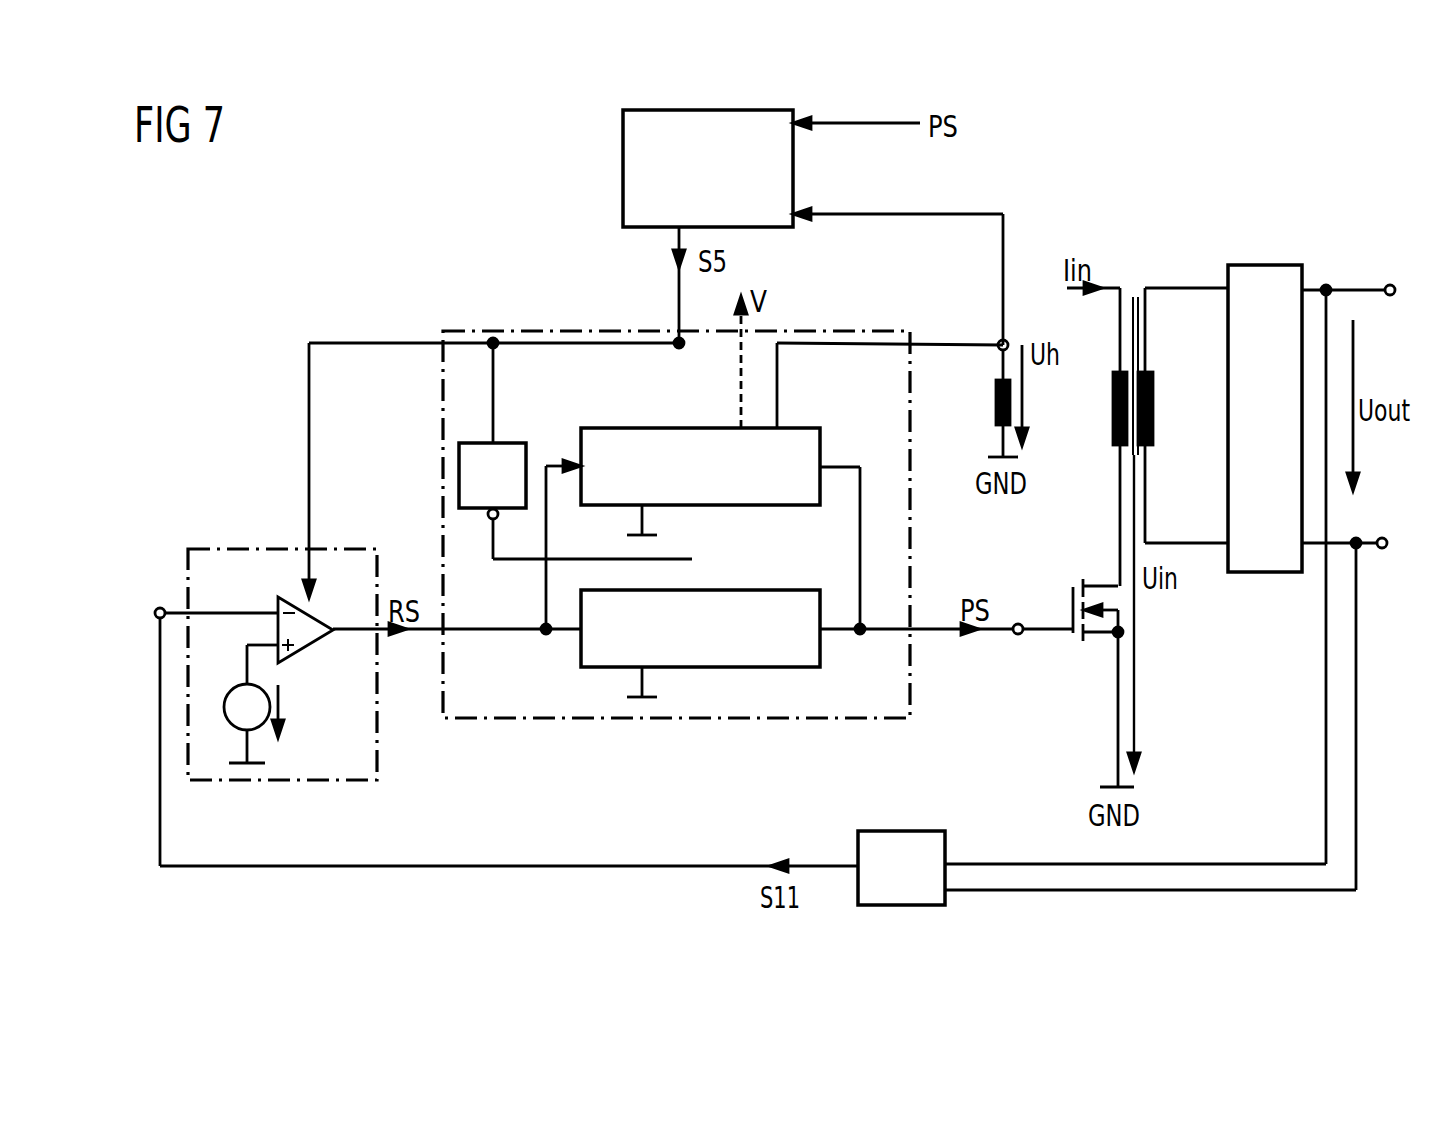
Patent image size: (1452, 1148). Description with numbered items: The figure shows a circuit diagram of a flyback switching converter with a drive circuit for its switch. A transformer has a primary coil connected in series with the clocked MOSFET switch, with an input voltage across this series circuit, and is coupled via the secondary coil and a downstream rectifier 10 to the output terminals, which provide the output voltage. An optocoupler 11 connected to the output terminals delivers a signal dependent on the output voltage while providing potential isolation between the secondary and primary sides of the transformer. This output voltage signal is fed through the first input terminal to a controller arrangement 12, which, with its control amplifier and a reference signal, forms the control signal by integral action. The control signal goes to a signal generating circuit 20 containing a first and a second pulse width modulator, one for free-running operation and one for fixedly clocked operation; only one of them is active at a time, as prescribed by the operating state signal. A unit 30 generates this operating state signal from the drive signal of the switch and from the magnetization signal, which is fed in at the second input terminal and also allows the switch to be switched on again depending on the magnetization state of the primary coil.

The rectifier 10 is at (1268, 265).
The optocoupler 11 is at (898, 831).
The controller arrangement 12 is at (246, 549).
The signal generating circuit 20 is at (443, 423).
The unit 30 is at (793, 166).